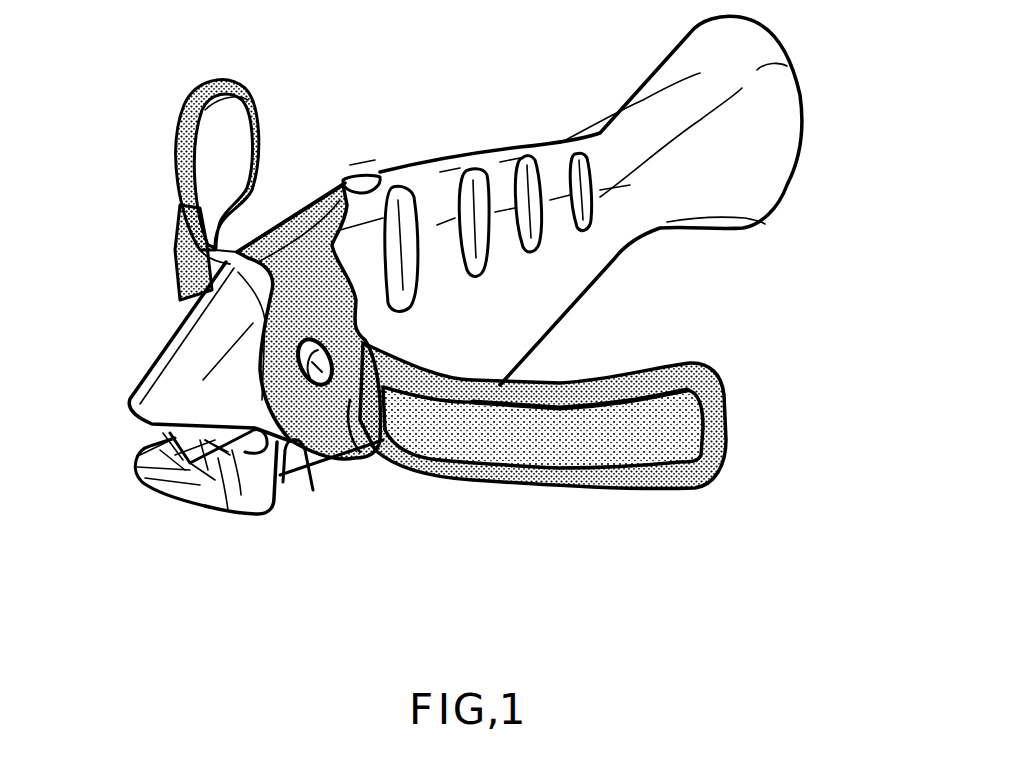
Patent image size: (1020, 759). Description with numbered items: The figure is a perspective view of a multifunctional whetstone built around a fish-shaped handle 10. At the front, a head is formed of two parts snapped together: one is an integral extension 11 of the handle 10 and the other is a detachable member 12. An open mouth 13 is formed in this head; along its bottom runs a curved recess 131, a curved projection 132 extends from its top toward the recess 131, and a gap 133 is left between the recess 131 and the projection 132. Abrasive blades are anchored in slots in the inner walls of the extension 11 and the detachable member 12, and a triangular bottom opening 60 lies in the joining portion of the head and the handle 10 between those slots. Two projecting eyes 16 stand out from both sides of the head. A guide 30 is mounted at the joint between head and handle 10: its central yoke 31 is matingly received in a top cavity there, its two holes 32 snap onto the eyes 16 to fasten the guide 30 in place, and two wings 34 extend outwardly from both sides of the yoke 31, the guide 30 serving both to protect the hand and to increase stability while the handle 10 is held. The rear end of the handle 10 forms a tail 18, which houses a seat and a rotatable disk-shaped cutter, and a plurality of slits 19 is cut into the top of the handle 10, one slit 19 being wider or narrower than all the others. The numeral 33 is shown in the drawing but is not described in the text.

The handle 10 is at (600, 275).
The integral extension 11 is at (163, 329).
The detachable member 12 is at (242, 505).
The open mouth 13 is at (118, 437).
The projecting eyes 16 is at (330, 410).
The tail 18 is at (777, 167).
The slits 19 is at (442, 172).
The guide 30 is at (190, 97).
The central yoke 31 is at (283, 208).
The holes 32 is at (317, 415).
The loop opening 33 is at (243, 115).
The wings 34 is at (722, 382).
The triangular bottom opening 60 is at (287, 495).
The curved recess 131 is at (210, 477).
The curved projection 132 is at (135, 480).
The gap 133 is at (160, 502).